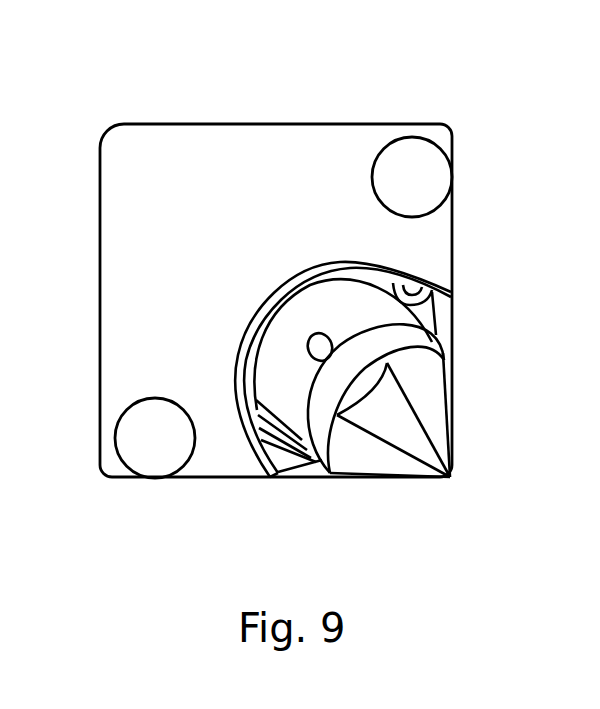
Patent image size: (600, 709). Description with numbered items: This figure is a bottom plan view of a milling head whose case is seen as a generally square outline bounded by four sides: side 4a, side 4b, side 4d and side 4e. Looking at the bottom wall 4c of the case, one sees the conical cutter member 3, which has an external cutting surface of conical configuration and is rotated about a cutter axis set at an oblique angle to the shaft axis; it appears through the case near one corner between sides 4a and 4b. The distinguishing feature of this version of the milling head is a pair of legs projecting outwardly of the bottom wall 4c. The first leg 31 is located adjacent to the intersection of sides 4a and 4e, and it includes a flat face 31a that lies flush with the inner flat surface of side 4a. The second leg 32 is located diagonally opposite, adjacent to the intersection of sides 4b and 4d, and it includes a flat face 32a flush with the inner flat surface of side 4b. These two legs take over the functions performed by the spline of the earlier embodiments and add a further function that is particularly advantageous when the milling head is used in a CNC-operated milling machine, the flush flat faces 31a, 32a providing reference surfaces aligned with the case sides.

The conical cutter member 3 is at (397, 430).
The side of case 4a is at (455, 247).
The side of case 4b is at (244, 479).
The bottom wall of case 4c is at (124, 139).
The side of case 4d is at (100, 266).
The side of case 4e is at (236, 124).
The leg 31 is at (402, 158).
The flat face 31a is at (455, 140).
The leg 32 is at (133, 432).
The flat face 32a is at (140, 476).